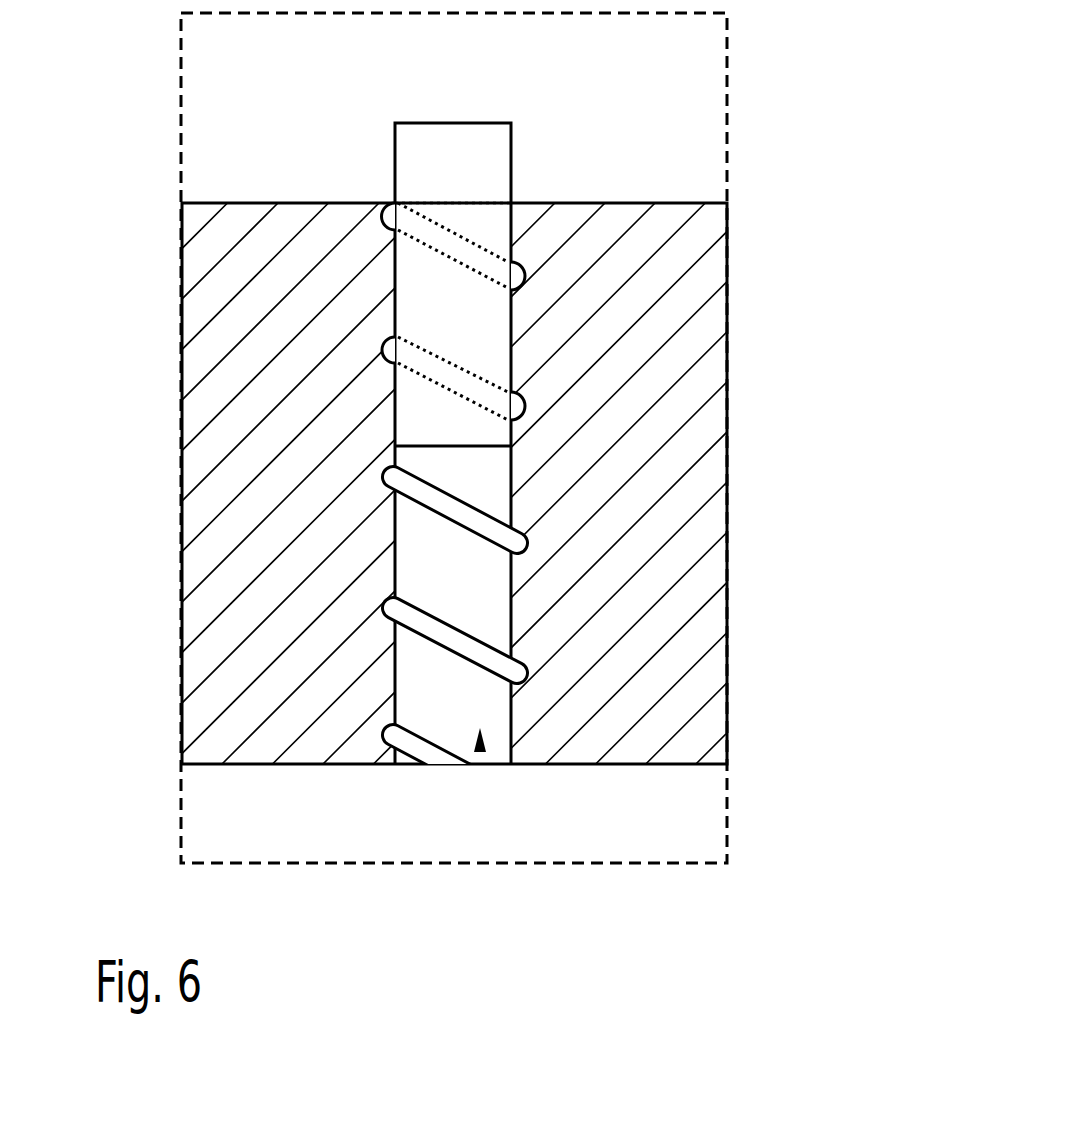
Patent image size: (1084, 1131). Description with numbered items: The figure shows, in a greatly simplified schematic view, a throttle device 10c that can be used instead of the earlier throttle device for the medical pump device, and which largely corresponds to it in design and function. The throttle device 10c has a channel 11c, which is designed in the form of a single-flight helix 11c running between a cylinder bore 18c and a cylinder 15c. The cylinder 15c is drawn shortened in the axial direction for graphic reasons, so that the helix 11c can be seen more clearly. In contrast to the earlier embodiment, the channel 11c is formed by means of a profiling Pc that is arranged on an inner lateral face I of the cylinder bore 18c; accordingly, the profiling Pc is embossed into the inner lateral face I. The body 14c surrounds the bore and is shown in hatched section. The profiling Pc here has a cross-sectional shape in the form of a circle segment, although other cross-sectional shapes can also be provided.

The throttle device 10c is at (728, 63).
The component with threaded hole 14c is at (197, 267).
The cylinder 15c is at (419, 460).
The channel 11c is at (437, 497).
The profiling Pc is at (280, 639).
The inner lateral face I is at (507, 323).
The cylinder bore 18c is at (480, 750).